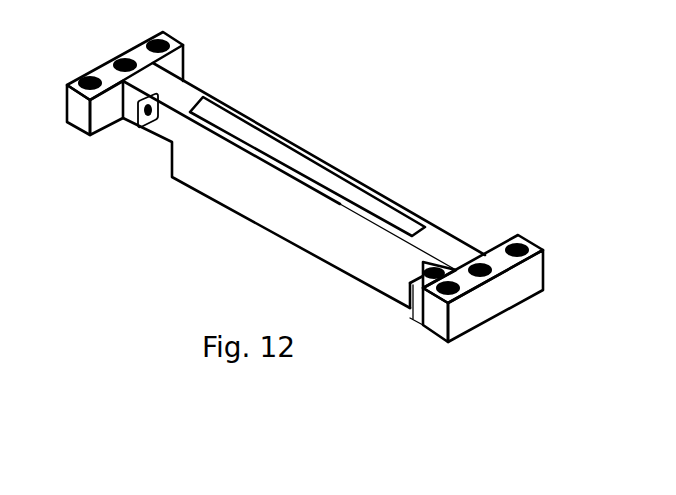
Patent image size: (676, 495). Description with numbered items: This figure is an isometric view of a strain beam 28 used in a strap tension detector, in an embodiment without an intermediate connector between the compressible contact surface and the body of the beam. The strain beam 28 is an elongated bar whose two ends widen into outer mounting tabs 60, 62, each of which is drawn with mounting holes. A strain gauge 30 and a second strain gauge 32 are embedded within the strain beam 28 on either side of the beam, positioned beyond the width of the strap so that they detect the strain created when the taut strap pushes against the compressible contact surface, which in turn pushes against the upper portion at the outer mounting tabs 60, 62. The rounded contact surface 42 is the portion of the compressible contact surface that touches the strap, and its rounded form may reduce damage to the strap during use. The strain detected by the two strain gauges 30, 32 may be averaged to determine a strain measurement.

The strain beam 28 is at (325, 163).
The strain gauge 30 is at (148, 127).
The strain gauge 32 is at (437, 263).
The rounded contact surface 42 is at (195, 191).
The outer mounting tab 60 is at (187, 46).
The outer mounting tab 62 is at (517, 280).